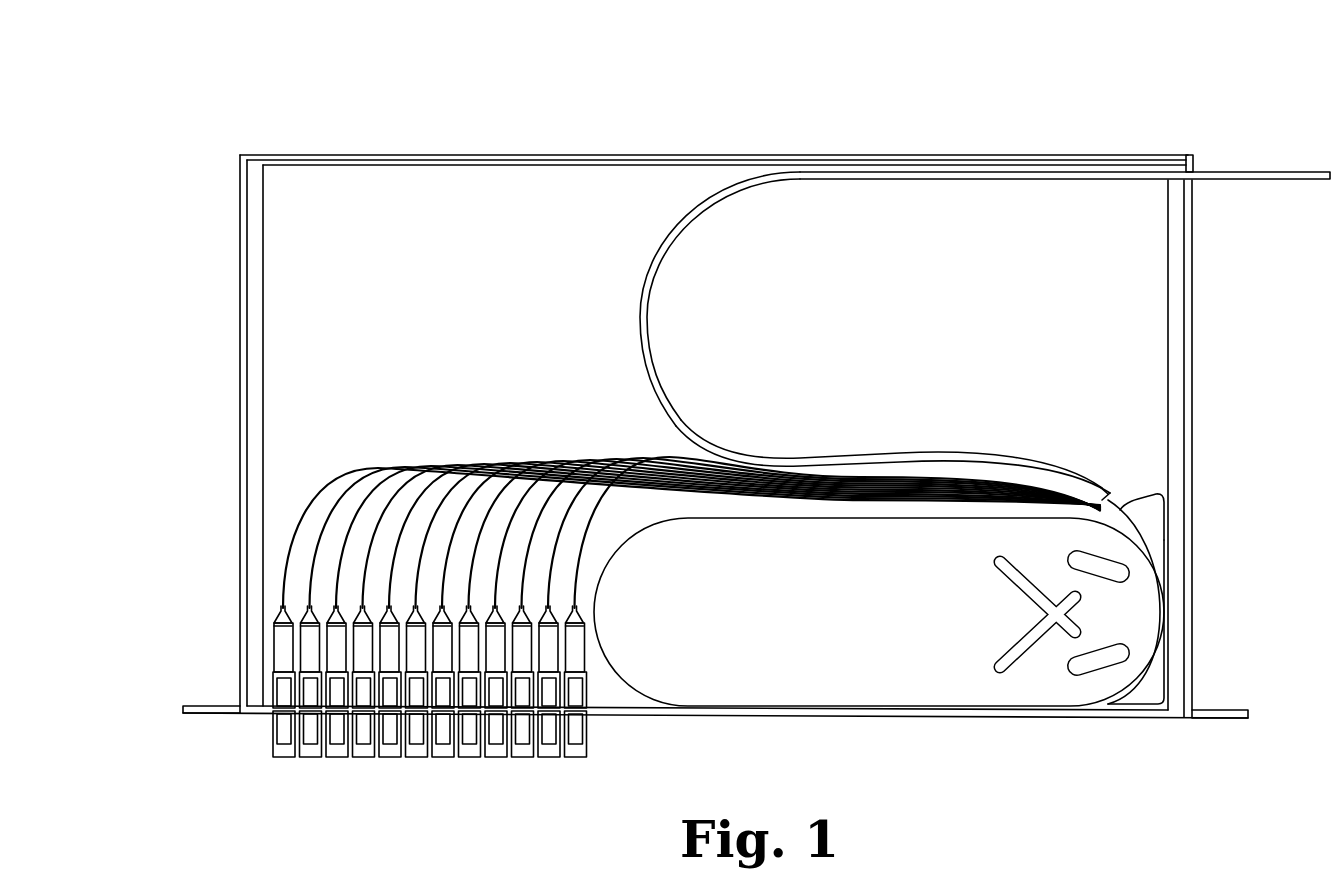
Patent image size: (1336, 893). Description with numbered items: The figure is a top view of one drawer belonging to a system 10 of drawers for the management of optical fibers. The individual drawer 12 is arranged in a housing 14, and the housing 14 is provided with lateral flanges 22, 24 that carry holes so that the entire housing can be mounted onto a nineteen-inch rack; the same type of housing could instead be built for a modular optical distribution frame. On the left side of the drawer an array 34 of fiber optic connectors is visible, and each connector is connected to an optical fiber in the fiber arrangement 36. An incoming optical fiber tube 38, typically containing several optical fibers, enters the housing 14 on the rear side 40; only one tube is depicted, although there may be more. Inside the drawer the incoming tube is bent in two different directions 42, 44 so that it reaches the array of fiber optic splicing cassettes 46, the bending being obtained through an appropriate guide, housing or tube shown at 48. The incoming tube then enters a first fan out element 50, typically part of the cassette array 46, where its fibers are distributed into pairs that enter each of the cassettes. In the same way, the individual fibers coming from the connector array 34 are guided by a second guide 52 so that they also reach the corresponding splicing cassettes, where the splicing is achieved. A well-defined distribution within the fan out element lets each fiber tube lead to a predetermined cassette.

The system of drawers 10 is at (508, 126).
The drawer 12 is at (300, 265).
The housing 14 is at (240, 405).
The lateral flange 22 is at (210, 703).
The lateral flange 24 is at (1226, 710).
The array of fiber optic connectors 34 is at (498, 772).
The fiber arrangement 36 is at (466, 440).
The incoming optical fiber tube 38 is at (1265, 181).
The rear side 40 is at (1212, 156).
The first bending direction 42 is at (648, 313).
The second bending direction 44 is at (1111, 478).
The array of fiber optic splicing cassettes 46 is at (929, 750).
The guide 48 is at (978, 462).
The first fan out element 50 is at (1152, 522).
The second guide 52 is at (1110, 700).